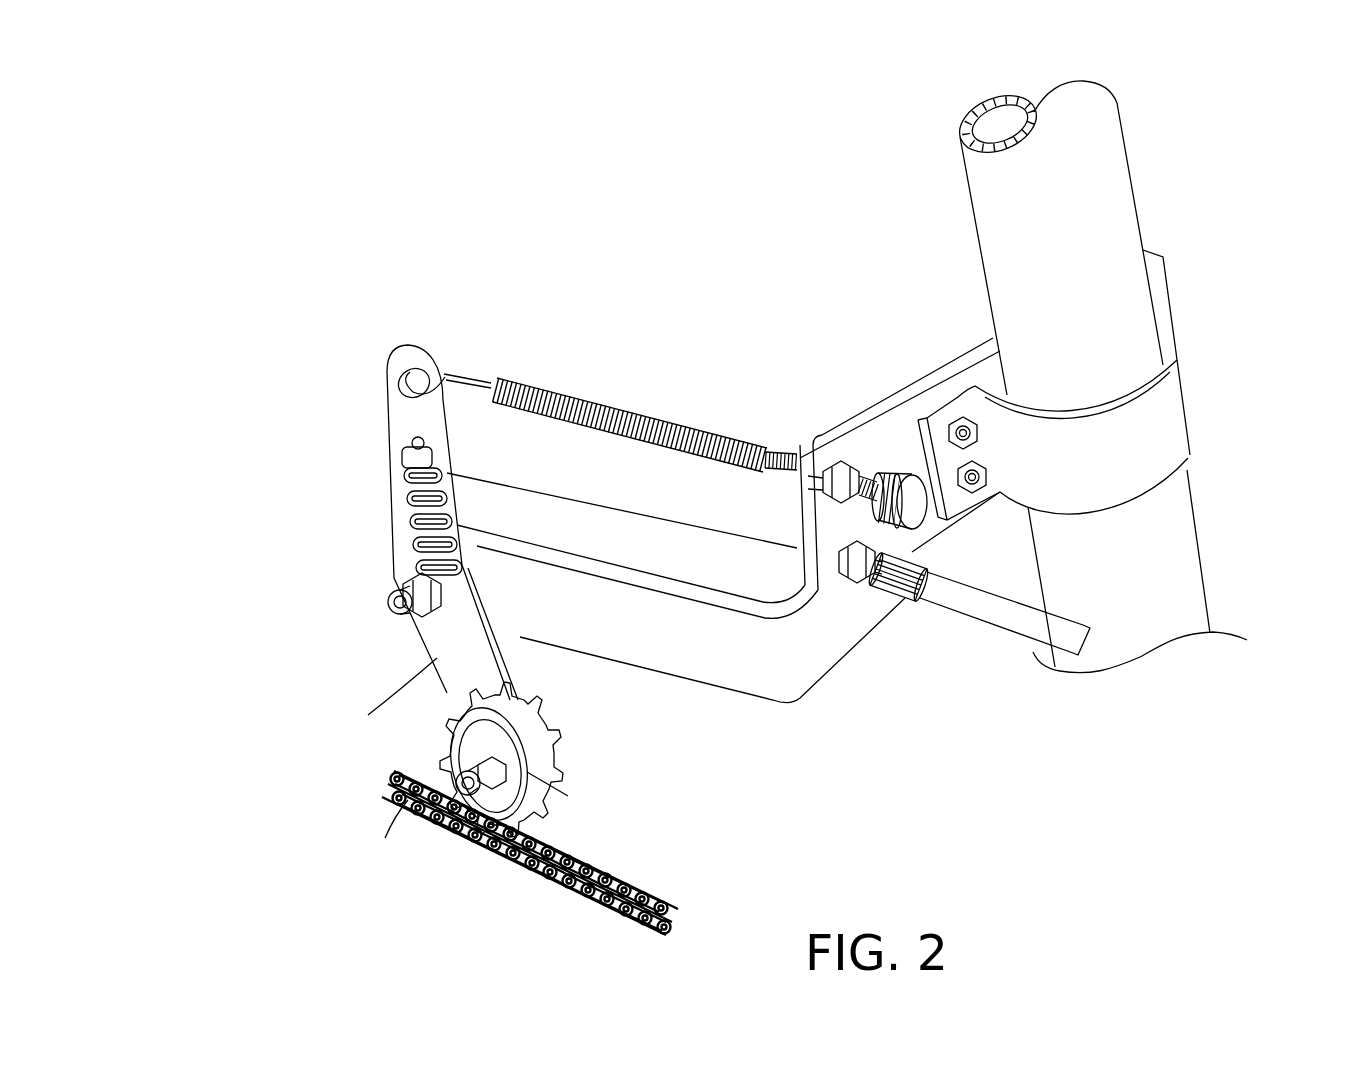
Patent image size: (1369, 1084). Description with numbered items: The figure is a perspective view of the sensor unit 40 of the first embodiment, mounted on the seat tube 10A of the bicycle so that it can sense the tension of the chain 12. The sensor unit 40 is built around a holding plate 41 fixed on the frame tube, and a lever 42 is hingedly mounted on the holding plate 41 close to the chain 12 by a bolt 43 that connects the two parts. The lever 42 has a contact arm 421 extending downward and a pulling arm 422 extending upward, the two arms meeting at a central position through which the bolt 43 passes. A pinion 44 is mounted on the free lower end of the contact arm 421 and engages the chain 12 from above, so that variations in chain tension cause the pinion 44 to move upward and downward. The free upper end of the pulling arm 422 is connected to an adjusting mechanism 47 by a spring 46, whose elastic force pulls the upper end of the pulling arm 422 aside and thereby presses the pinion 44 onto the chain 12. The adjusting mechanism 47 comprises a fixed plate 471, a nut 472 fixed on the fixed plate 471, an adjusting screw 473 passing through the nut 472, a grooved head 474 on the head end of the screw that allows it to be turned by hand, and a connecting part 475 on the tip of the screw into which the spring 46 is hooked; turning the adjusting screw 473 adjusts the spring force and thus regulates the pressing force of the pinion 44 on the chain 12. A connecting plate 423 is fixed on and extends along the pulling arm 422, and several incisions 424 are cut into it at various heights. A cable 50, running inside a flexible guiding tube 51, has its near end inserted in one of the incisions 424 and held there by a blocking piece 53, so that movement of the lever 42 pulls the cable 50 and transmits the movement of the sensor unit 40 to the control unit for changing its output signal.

The seat tube 10A is at (1137, 213).
The chain 12 is at (410, 797).
The sensor unit 40 is at (240, 420).
The holding plate 41 is at (763, 660).
The lever 42 is at (397, 568).
The contact arm 421 is at (438, 660).
The pulling arm 422 is at (402, 352).
The connecting plate 423 is at (415, 465).
The incisions 424 is at (410, 497).
The bolt 43 is at (396, 614).
The pinion 44 is at (537, 783).
The spring 46 is at (523, 380).
The adjusting mechanism 47 is at (870, 456).
The fixed plate 471 is at (827, 433).
The nut 472 is at (823, 493).
The adjusting screw 473 is at (862, 506).
The grooved head 474 is at (900, 468).
The connecting part 475 is at (763, 438).
The cable 50 is at (620, 510).
The flexible guiding tube 51 is at (985, 610).
The blocking piece 53 is at (393, 430).